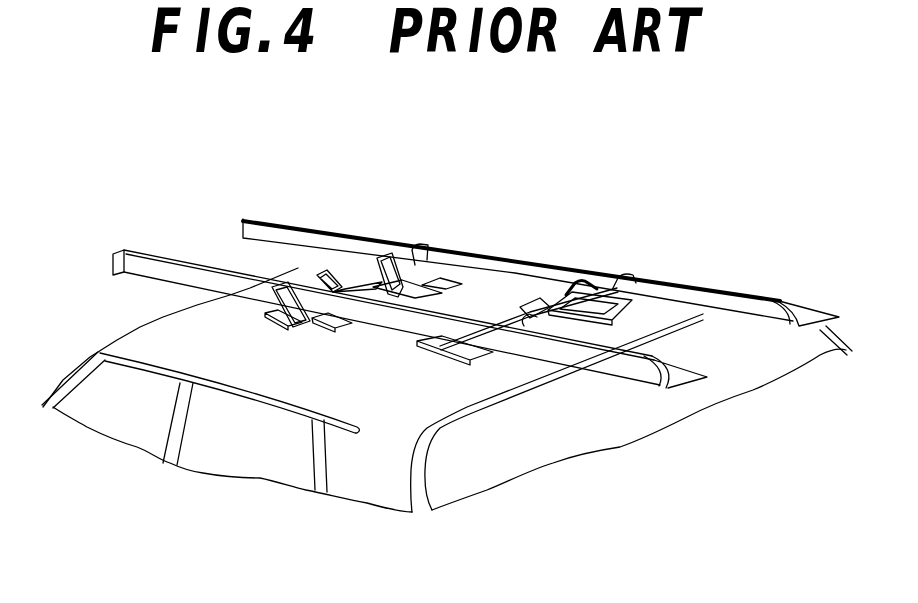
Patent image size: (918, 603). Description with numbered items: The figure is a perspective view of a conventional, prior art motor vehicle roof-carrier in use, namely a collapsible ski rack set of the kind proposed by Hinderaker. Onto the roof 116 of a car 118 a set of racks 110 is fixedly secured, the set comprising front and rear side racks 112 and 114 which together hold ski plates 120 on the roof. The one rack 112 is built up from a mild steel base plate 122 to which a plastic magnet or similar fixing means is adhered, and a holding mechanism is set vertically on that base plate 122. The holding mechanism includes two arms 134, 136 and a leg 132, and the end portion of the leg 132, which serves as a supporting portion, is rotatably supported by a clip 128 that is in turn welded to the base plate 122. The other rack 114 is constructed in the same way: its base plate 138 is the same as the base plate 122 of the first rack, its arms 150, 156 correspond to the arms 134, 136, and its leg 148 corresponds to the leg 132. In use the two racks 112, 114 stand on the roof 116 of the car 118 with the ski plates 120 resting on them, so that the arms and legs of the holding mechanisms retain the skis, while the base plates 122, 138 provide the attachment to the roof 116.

The set of racks 110 is at (645, 233).
The front side rack 112 is at (413, 226).
The rear side rack 114 is at (626, 258).
The roof 116 is at (143, 337).
The car 118 is at (353, 485).
The ski plates 120 is at (747, 315).
The base plate 122 is at (270, 318).
The clip 128 is at (318, 328).
The leg 132 is at (366, 266).
The arm 134 is at (271, 284).
The arm 136 is at (395, 327).
The base plate 138 is at (485, 360).
The leg 148 is at (462, 353).
The arm 150 is at (508, 335).
The arm 156 is at (577, 287).